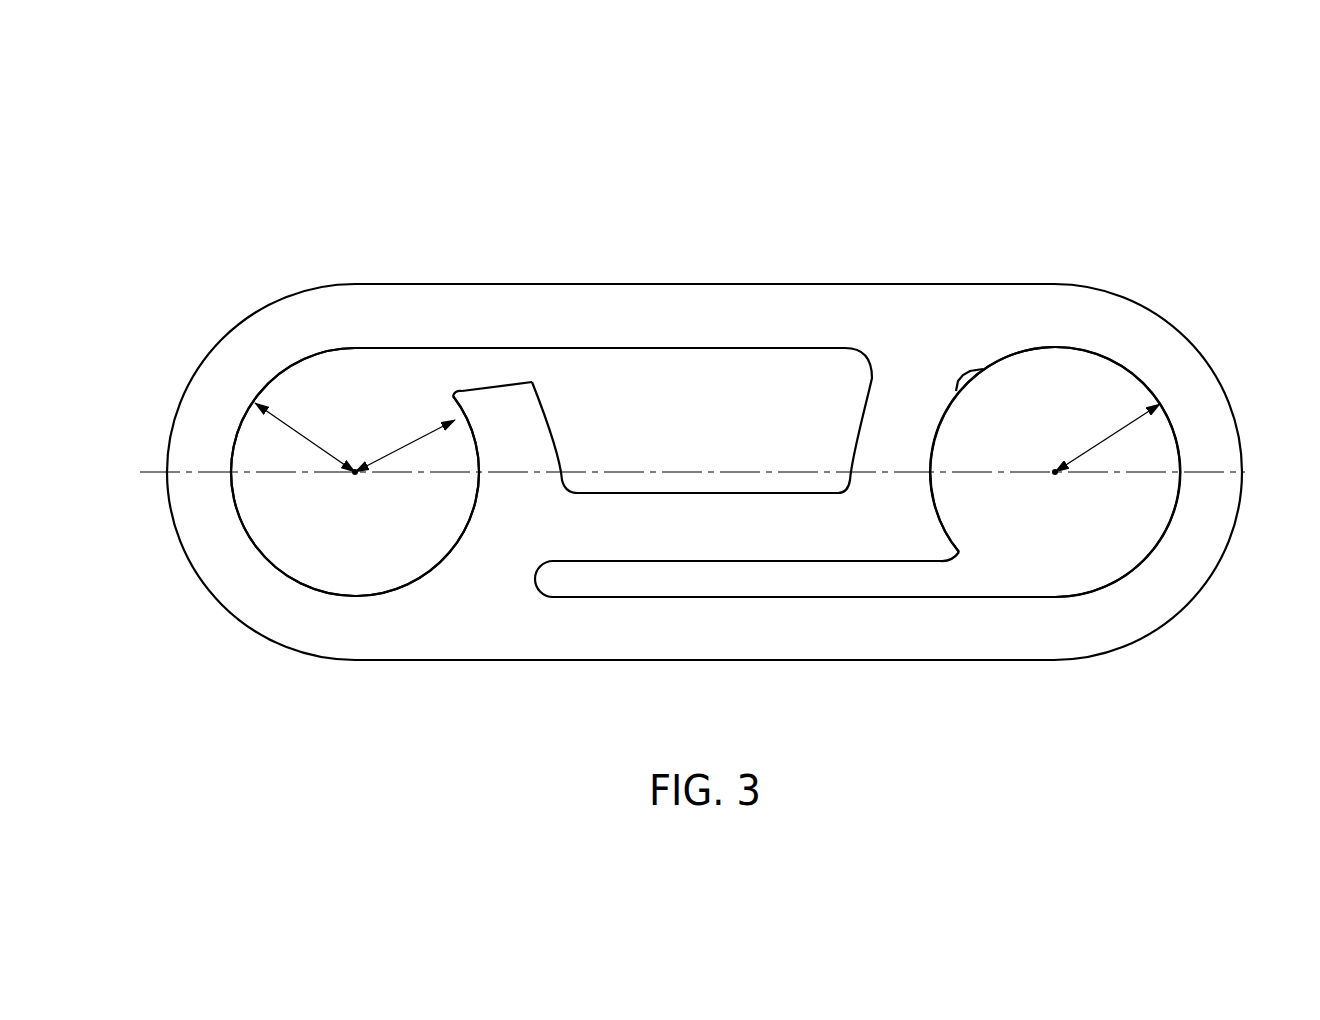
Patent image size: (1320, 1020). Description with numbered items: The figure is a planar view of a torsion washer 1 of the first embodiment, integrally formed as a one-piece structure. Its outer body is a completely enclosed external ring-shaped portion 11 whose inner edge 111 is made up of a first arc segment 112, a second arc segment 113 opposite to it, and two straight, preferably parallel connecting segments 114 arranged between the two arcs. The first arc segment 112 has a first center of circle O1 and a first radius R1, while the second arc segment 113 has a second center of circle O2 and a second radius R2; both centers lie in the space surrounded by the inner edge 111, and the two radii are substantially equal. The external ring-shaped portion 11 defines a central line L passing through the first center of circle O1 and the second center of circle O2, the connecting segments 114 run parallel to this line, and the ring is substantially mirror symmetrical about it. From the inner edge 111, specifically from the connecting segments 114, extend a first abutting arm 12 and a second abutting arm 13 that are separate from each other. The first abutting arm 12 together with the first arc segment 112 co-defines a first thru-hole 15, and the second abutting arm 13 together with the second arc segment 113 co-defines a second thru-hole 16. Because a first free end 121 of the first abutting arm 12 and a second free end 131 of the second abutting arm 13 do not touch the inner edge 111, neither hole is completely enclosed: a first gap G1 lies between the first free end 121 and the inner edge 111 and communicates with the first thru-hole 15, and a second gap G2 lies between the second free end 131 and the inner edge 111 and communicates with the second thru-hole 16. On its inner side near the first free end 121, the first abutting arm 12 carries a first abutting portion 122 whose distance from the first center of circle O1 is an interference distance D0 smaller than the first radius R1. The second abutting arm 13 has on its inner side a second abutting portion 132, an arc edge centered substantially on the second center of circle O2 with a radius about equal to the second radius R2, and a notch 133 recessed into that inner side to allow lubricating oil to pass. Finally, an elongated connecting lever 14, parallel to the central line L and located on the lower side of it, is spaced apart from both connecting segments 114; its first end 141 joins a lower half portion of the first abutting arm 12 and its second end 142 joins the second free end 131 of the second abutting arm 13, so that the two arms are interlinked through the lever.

The torsion washer 1 is at (1231, 118).
The external ring-shaped portion 11 is at (745, 284).
The inner edge 111 is at (200, 102).
The first arc segment 112 is at (283, 370).
The second arc segment 113 is at (1120, 363).
The connecting segments 114 is at (698, 678).
The first abutting arm 12 is at (407, 245).
The first free end 121 is at (495, 383).
The first abutting portion 122 is at (452, 396).
The second abutting arm 13 is at (912, 713).
The second free end 131 is at (930, 562).
The second abutting portion 132 is at (936, 503).
The notch 133 is at (961, 378).
The connecting lever 14 is at (676, 493).
The first end 141 is at (565, 527).
The second end 142 is at (836, 530).
The first thru-hole 15 is at (280, 526).
The second thru-hole 16 is at (1128, 527).
The first center of circle O1 is at (355, 479).
The second center of circle O2 is at (1057, 479).
The first radius R1 is at (305, 436).
The second radius R2 is at (1107, 436).
The interference distance D0 is at (405, 439).
The central line L is at (737, 470).
The first gap G1 is at (517, 366).
The second gap G2 is at (910, 575).